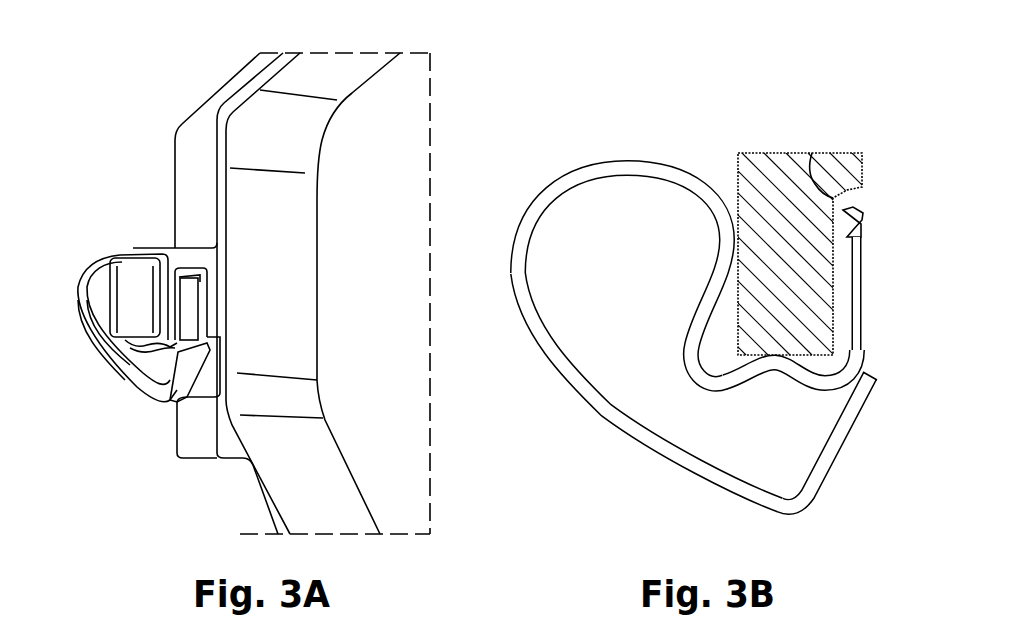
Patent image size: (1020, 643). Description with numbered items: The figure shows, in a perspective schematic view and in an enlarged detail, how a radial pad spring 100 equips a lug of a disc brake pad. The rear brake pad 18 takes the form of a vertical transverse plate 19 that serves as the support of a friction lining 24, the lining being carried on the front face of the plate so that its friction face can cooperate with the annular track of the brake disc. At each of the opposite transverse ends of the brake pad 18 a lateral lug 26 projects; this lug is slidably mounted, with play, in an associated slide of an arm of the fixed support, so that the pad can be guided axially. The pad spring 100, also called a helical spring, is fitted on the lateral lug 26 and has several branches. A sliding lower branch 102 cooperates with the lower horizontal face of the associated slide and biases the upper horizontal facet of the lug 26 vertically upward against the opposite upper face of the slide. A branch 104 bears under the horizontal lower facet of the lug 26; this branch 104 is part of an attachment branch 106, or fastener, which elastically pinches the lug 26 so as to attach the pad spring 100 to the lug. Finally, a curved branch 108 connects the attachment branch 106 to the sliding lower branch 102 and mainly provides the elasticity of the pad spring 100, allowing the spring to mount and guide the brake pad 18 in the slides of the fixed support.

In FIG. 3A, the rear brake pad 18 is at (368, 32).
In FIG. 3A, the vertical transverse plate 19 is at (200, 137).
In FIG. 3A, the friction lining 24 is at (358, 293).
In FIG. 3A, the lateral lug 26 is at (137, 290).
In FIG. 3B, the lateral lug 26 is at (763, 190).
In FIG. 3A, the pad spring 100 is at (118, 388).
In FIG. 3B, the pad spring 100 is at (683, 153).
In FIG. 3A, the sliding lower branch 102 is at (173, 410).
In FIG. 3B, the sliding lower branch 102 is at (795, 509).
In FIG. 3A, the branch bearing under the lug 104 is at (120, 352).
In FIG. 3B, the branch bearing under the lug 104 is at (777, 363).
In FIG. 3A, the attachment branch 106 is at (190, 310).
In FIG. 3B, the attachment branch 106 is at (727, 247).
In FIG. 3A, the curved branch 108 is at (95, 292).
In FIG. 3B, the curved branch 108 is at (567, 373).